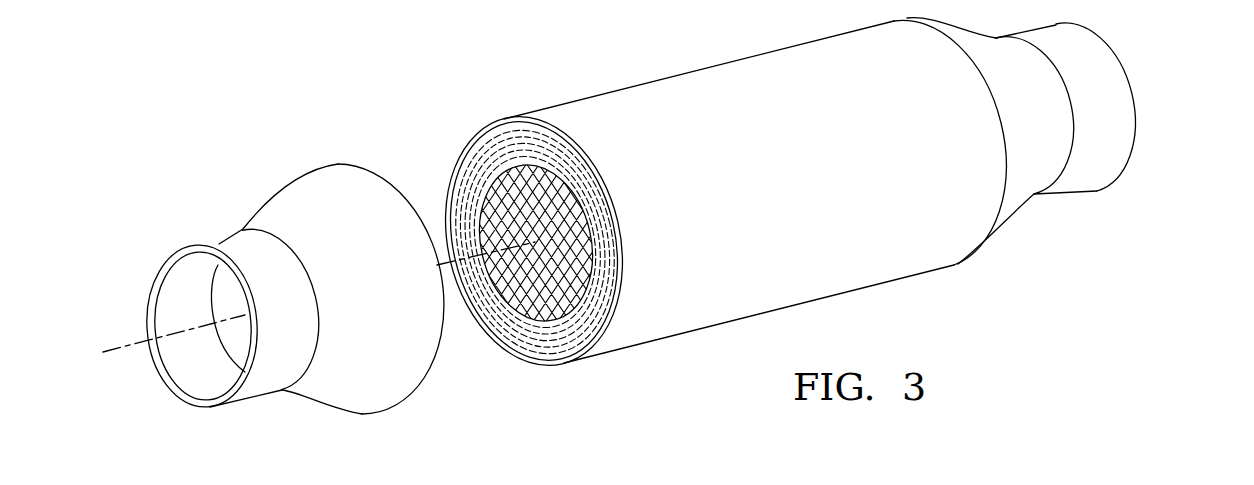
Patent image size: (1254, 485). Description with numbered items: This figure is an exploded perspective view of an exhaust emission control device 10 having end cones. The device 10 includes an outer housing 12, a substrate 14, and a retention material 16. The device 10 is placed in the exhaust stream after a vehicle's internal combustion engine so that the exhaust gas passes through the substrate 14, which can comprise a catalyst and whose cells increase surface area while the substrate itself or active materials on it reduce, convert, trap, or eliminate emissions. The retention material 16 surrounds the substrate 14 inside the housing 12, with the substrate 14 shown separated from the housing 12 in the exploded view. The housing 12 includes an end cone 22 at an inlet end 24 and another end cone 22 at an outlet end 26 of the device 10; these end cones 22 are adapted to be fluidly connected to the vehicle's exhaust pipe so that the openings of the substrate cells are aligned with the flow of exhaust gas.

The exhaust emission control device 10 is at (707, 55).
The outer housing 12 is at (858, 290).
The substrate 14 is at (521, 312).
The retention material 16 is at (558, 352).
The end cone 22 is at (227, 242).
The inlet end 24 is at (170, 293).
The outlet end 26 is at (1135, 135).